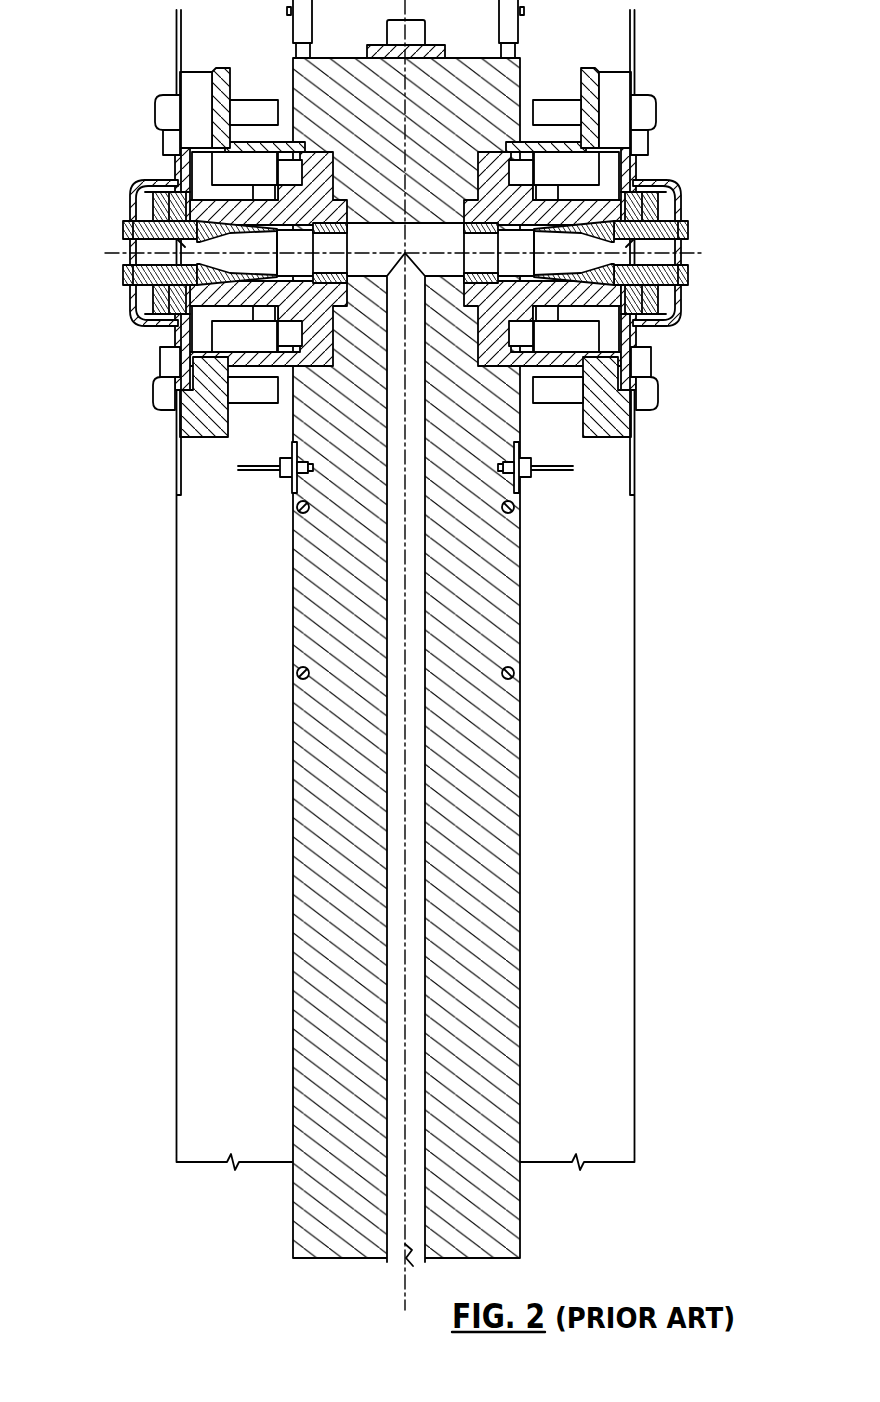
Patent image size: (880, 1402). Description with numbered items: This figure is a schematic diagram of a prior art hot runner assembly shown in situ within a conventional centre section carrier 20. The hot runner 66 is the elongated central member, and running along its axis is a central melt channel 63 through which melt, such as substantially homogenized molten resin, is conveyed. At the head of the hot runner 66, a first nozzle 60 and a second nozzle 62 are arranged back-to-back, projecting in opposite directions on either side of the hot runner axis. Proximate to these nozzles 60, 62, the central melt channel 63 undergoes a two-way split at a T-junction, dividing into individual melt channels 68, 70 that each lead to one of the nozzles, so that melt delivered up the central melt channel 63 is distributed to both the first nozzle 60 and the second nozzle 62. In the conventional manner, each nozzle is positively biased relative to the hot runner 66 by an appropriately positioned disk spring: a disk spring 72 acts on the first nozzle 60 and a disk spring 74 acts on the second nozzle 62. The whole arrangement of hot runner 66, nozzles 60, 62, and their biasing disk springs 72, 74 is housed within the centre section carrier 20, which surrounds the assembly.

The centre section carrier 20 is at (623, 702).
The first nozzle 60 is at (119, 231).
The second nozzle 62 is at (691, 233).
The central melt channel 63 is at (418, 1010).
The hot runner 66 is at (522, 838).
The individual melt channel 68 is at (153, 188).
The individual melt channel 70 is at (517, 237).
The disk spring 72 is at (131, 307).
The disk spring 74 is at (656, 178).